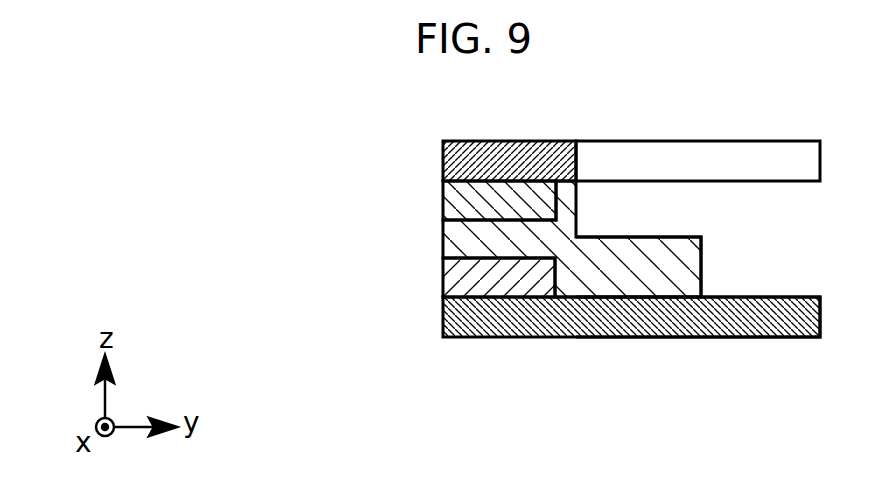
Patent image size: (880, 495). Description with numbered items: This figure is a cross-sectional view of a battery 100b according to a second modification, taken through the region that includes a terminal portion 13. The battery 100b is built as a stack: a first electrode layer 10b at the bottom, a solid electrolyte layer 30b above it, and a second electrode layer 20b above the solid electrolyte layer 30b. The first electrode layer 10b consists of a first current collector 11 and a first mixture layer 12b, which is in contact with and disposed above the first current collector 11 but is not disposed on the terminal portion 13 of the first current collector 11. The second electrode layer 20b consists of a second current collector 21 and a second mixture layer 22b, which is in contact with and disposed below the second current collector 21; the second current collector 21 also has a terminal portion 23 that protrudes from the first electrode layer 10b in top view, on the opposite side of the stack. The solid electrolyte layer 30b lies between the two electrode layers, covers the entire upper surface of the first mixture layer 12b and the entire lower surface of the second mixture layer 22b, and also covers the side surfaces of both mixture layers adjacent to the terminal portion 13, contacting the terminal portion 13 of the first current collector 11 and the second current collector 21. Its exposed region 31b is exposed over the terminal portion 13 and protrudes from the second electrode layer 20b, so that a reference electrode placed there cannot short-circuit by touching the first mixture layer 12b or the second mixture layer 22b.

The battery 100b is at (274, 155).
The second electrode layer 20b is at (350, 138).
The second current collector 21 is at (443, 160).
The second mixture layer 22b is at (443, 200).
The solid electrolyte layer 30b is at (443, 237).
The exposed region 31b is at (675, 238).
The first electrode layer 10b is at (350, 257).
The first mixture layer 12b is at (443, 280).
The first current collector 11 is at (443, 316).
The terminal portion 23 is at (820, 135).
The terminal portion 13 is at (820, 340).